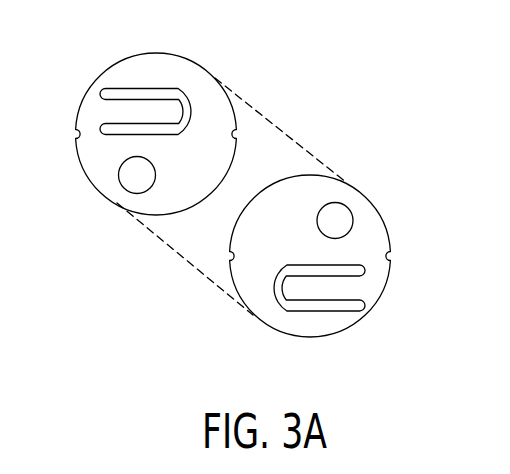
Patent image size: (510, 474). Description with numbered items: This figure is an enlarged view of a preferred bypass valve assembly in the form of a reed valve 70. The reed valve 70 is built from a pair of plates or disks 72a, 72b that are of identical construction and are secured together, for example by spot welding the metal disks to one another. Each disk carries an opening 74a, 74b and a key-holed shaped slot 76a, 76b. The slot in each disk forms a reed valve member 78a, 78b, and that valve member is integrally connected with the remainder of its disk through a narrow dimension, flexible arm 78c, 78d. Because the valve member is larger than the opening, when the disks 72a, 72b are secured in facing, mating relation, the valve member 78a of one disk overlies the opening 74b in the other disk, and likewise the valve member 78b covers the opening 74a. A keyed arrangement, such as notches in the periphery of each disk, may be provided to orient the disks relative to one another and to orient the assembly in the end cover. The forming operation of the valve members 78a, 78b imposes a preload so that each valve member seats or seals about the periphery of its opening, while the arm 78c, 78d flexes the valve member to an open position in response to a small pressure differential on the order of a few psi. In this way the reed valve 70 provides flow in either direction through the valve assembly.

The reed valve 70 is at (336, 116).
The plate or disk 72a is at (202, 83).
The plate or disk 72b is at (373, 233).
The opening 74a is at (127, 173).
The opening 74b is at (338, 213).
The key-holed shaped slot 76a is at (123, 93).
The key-holed shaped slot 76b is at (340, 305).
The reed valve member 78a is at (168, 97).
The reed valve member 78b is at (295, 293).
The flexible arm 78c is at (107, 110).
The flexible arm 78d is at (357, 290).